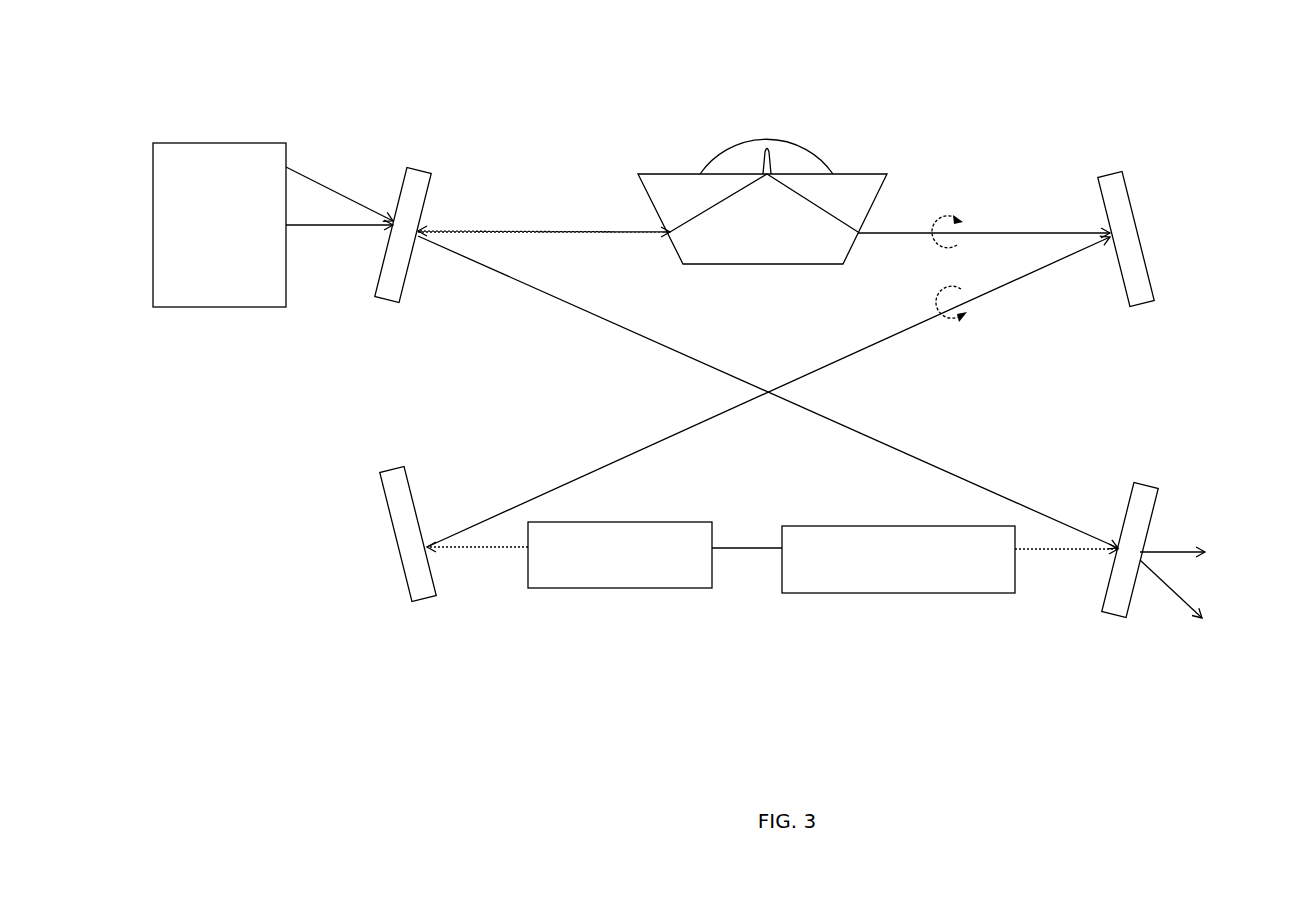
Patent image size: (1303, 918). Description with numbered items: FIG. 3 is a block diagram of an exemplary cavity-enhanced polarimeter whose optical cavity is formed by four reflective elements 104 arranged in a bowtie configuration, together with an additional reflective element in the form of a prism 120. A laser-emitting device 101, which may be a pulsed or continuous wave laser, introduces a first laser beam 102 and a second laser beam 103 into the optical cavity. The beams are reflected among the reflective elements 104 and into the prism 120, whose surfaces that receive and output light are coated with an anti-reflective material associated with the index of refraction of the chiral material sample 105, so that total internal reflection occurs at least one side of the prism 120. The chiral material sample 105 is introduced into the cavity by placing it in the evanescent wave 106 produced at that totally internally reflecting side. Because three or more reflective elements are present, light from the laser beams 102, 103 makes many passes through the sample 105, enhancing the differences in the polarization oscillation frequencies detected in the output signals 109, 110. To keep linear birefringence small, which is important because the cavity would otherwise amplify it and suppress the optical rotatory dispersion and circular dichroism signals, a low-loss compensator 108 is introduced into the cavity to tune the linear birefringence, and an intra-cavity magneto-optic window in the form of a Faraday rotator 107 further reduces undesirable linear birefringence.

The laser-emitting device 101 is at (203, 276).
The first laser beam 102 is at (350, 123).
The second laser beam 103 is at (343, 300).
The reflective element 104 is at (423, 182).
The chiral material sample 105 is at (800, 157).
The evanescent wave 106 is at (762, 152).
The Faraday rotator 107 is at (603, 580).
The compensator 108 is at (881, 583).
The output signal 109 is at (1240, 652).
The output signal 110 is at (1225, 505).
The prism 120 is at (780, 254).